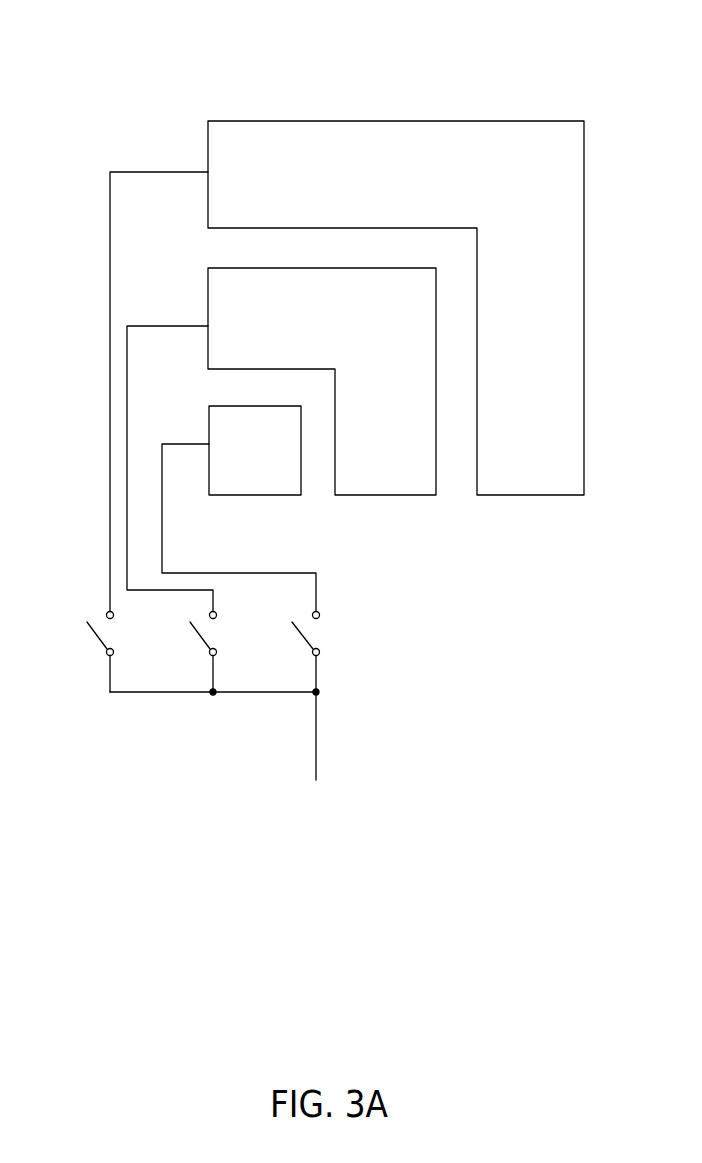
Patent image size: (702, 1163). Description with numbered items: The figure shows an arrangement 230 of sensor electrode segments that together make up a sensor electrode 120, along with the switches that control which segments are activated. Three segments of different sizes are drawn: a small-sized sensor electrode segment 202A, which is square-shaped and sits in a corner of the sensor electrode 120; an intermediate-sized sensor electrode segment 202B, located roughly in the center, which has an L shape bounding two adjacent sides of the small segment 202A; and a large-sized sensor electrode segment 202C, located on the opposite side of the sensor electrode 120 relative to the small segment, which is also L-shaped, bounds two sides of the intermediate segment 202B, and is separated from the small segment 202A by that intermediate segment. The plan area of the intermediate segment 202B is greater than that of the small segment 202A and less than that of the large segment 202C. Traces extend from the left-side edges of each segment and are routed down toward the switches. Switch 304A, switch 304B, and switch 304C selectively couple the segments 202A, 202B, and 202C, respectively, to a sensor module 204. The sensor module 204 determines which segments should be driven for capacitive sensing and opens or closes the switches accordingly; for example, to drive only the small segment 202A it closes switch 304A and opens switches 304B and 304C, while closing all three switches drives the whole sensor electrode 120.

The arrangement 230 is at (243, 66).
The large-sized sensor electrode segment 202C is at (430, 183).
The intermediate-sized sensor electrode segment 202B is at (340, 328).
The small-sized sensor electrode segment 202A is at (267, 462).
The sensor electrode 120 is at (80, 423).
The switch 304A is at (331, 639).
The switch 304B is at (230, 639).
The switch 304C is at (120, 631).
The sensor module 204 is at (313, 769).